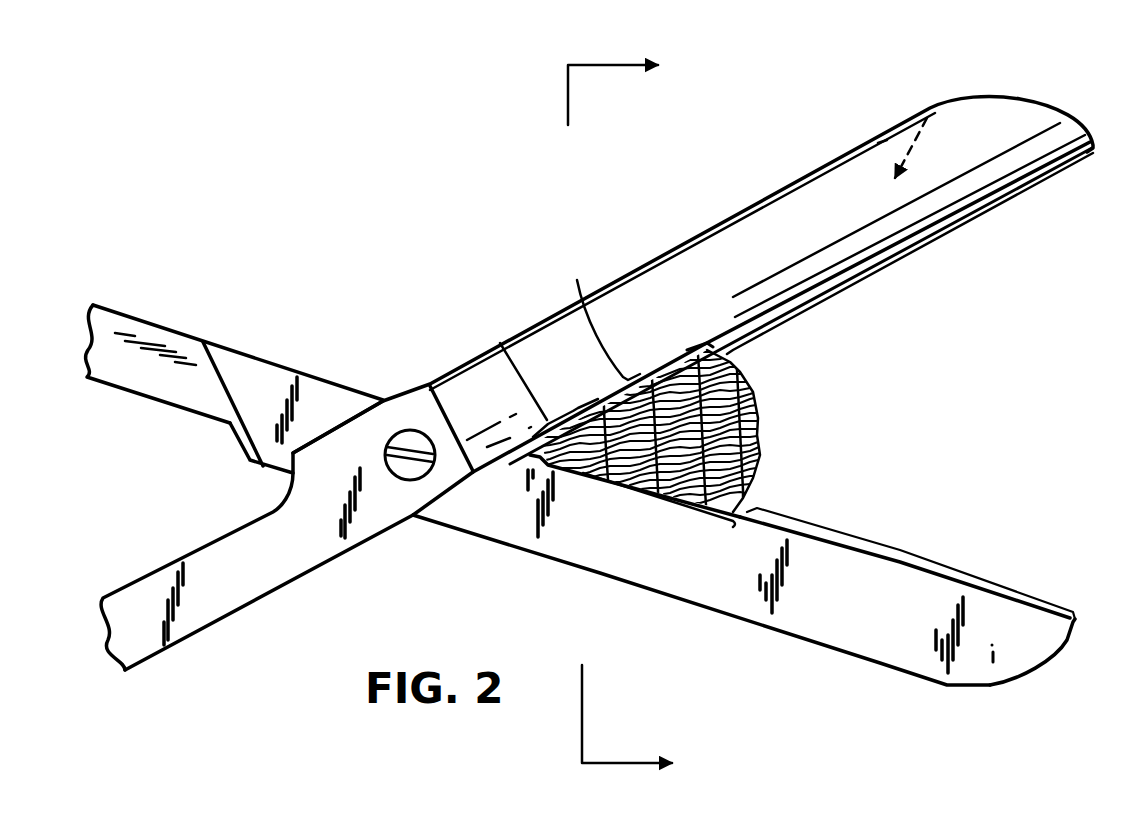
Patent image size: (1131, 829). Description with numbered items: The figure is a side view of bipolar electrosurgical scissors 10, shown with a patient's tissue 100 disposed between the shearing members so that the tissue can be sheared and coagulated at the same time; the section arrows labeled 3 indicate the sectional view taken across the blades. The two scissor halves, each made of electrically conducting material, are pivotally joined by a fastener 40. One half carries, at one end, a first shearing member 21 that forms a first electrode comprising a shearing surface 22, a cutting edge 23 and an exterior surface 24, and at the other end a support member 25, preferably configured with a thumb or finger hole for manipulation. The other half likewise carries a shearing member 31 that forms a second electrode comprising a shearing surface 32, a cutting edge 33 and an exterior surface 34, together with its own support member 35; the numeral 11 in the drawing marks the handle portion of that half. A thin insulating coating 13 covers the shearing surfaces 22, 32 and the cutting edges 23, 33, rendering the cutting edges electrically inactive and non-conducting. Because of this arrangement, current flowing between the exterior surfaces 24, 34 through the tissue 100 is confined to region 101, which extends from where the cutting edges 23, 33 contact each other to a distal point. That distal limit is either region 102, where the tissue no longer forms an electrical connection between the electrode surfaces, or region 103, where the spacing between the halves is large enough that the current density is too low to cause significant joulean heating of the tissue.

The section line for FIG. 3 is at (622, 415).
The bipolar electrosurgical scissors 10 is at (167, 318).
The lower handle 11 is at (187, 593).
The insulating coating 13 is at (660, 558).
The first shearing member 21 is at (675, 602).
The shearing surface 22 is at (812, 628).
The cutting edge 23 is at (860, 562).
The exterior surface 24 is at (995, 673).
The support member 25 is at (130, 392).
The shearing member 31 is at (792, 183).
The shearing surface 32 is at (927, 118).
The cutting edge 33 is at (1003, 197).
The exterior surface 34 is at (690, 265).
The support member 35 is at (228, 617).
The fastener 40 is at (406, 431).
The tissue 100 is at (757, 426).
The region of current flow 101 is at (500, 343).
The region where tissue no longer connects electrodes 102 is at (577, 281).
The region of low current density 103 is at (883, 267).